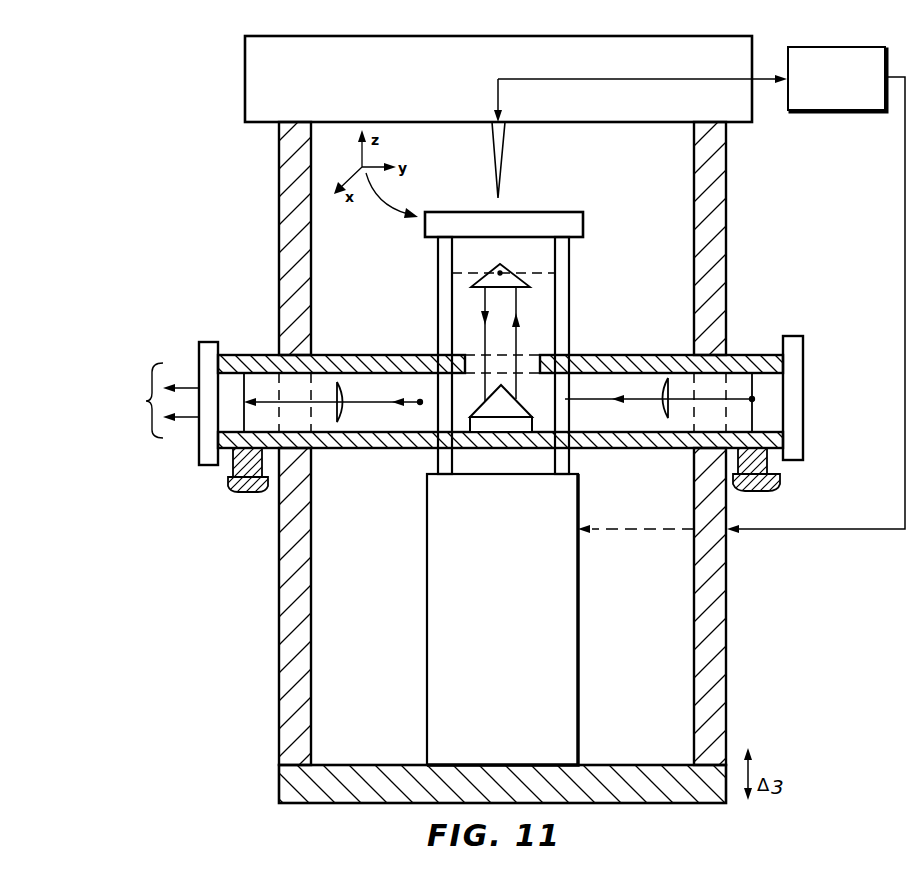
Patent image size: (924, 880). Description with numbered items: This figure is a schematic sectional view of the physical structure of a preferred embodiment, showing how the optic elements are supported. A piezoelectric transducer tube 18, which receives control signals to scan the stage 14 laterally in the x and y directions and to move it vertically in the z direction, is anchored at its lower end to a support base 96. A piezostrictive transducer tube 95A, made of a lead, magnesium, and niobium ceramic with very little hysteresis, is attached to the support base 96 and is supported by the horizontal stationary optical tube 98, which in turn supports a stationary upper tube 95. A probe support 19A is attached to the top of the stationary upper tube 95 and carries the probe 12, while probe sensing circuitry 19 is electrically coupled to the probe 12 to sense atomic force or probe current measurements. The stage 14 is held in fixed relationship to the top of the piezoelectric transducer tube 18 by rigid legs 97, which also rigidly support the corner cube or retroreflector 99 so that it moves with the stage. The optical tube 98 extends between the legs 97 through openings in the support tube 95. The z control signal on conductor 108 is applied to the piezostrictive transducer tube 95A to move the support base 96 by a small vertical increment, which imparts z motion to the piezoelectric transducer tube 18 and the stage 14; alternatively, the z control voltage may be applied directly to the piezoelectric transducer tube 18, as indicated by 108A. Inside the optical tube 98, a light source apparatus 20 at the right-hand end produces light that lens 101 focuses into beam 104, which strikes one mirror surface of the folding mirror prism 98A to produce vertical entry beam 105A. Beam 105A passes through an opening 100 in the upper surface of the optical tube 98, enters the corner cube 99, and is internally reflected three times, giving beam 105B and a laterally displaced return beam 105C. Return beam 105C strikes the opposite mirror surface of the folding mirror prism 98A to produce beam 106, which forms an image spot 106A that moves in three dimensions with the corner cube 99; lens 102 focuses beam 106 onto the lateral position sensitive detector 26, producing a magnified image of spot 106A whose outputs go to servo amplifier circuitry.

The probe support 19A is at (245, 84).
The probe sensing circuitry 19 is at (788, 58).
The probe 12 is at (503, 158).
The stage 14 is at (560, 226).
The beam 105B is at (500, 273).
The corner cube (retroreflector) 99 is at (500, 262).
The rigid legs 97 is at (438, 290).
The return beam 105C is at (485, 323).
The vertical beam (entry beam) 105A is at (522, 322).
The opening 100 is at (540, 355).
The horizontal stationary optical tube 98 is at (350, 448).
The lens 102 is at (337, 382).
The beam 106 is at (376, 386).
The beam 104 is at (614, 384).
The light source apparatus 20 is at (752, 399).
The lateral position sensitive detector 26 is at (199, 446).
The image spot (focus spot) 106A is at (420, 402).
The folding mirror prism 98A is at (513, 424).
The lens 101 is at (662, 418).
The stationary upper tube 95 is at (279, 244).
The piezostrictive transducer tube 95A is at (279, 556).
The conductor 108 is at (905, 238).
The z control input to piezoelectric transducer 108A is at (610, 529).
The piezoelectric transducer tube 18 is at (427, 558).
The support base 96 is at (322, 790).